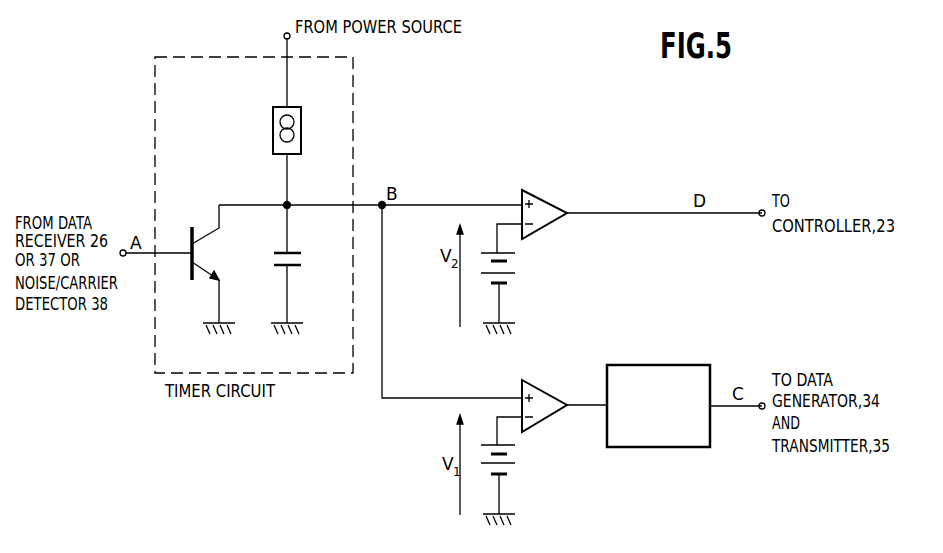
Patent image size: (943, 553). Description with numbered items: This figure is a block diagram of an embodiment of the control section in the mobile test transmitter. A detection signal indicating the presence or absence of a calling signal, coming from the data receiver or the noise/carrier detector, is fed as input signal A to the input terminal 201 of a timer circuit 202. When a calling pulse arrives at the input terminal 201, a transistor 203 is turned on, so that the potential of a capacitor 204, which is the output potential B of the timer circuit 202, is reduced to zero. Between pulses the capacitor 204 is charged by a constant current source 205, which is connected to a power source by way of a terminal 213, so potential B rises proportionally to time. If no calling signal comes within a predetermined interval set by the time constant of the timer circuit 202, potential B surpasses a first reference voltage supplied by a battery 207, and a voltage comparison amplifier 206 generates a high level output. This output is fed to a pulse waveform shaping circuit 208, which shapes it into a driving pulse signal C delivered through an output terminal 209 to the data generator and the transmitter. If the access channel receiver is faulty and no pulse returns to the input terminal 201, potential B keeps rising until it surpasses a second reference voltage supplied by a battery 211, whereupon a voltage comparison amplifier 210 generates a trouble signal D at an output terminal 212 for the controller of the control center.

The input terminal 201 is at (123, 250).
The timer circuit 202 is at (354, 104).
The transistor 203 is at (206, 229).
The capacitor 204 is at (304, 258).
The constant current source 205 is at (277, 106).
The voltage comparison amplifier 206 is at (540, 383).
The battery 207 is at (516, 458).
The pulse waveform shaping circuit 208 is at (667, 364).
The output terminal C 209 is at (760, 411).
The voltage comparison amplifier 210 is at (540, 192).
The battery 211 is at (515, 268).
The output terminal D 212 is at (760, 217).
The terminal 213 is at (284, 34).